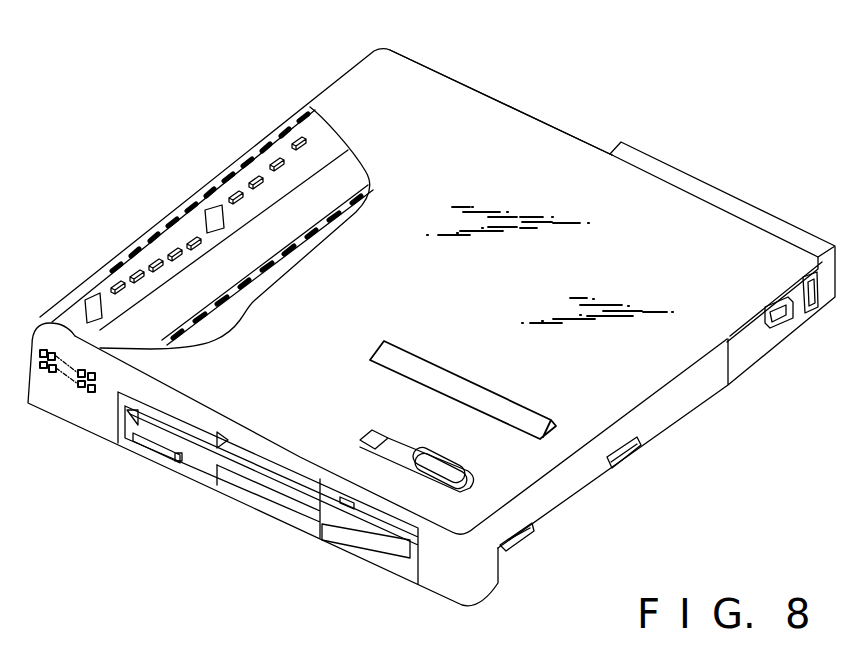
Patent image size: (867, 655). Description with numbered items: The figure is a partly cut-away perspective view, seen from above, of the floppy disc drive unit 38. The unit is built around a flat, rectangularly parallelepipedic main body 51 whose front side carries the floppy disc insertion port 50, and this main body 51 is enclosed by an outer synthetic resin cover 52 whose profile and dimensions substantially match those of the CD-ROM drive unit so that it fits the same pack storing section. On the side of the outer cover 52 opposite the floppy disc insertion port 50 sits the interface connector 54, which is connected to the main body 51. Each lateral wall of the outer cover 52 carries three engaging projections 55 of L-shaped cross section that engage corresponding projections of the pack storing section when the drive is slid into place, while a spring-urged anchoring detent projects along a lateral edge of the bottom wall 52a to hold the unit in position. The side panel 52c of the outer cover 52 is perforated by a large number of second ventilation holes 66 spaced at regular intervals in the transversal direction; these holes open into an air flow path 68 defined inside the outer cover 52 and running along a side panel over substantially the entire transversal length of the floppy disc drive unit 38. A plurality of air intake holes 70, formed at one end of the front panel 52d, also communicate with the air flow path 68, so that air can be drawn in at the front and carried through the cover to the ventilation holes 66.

The outer cover 52 is at (464, 112).
The bottom wall 52a is at (583, 167).
The side panel 52c is at (170, 220).
The front panel 52d is at (98, 422).
The floppy disc drive unit 38 is at (521, 171).
The interface connector 54 is at (775, 223).
The engaging projections 55 is at (782, 317).
The second ventilation holes 66 is at (248, 178).
The air flow path 68 is at (347, 174).
The air intake holes 70 is at (53, 380).
The main body 51 is at (200, 465).
The floppy disc insertion port 50 is at (362, 527).